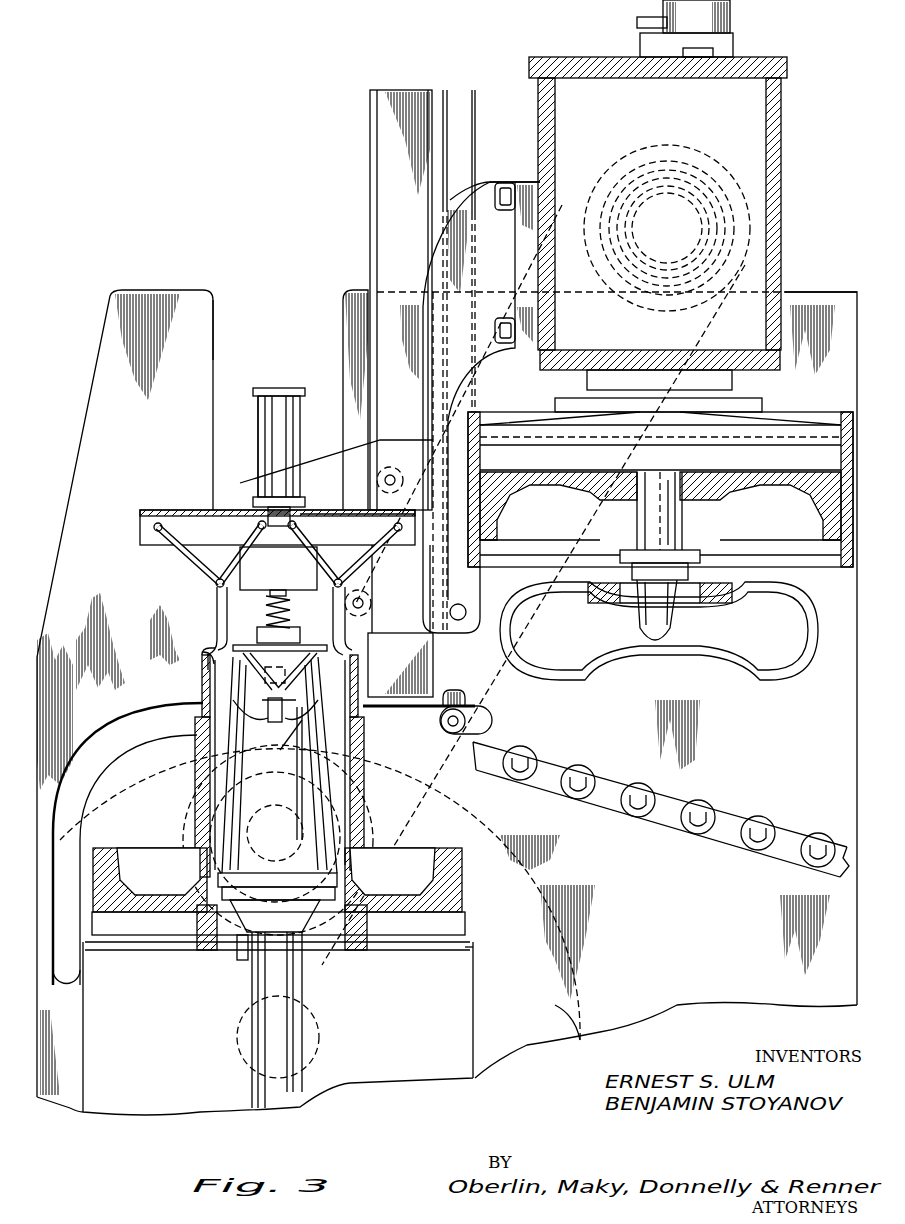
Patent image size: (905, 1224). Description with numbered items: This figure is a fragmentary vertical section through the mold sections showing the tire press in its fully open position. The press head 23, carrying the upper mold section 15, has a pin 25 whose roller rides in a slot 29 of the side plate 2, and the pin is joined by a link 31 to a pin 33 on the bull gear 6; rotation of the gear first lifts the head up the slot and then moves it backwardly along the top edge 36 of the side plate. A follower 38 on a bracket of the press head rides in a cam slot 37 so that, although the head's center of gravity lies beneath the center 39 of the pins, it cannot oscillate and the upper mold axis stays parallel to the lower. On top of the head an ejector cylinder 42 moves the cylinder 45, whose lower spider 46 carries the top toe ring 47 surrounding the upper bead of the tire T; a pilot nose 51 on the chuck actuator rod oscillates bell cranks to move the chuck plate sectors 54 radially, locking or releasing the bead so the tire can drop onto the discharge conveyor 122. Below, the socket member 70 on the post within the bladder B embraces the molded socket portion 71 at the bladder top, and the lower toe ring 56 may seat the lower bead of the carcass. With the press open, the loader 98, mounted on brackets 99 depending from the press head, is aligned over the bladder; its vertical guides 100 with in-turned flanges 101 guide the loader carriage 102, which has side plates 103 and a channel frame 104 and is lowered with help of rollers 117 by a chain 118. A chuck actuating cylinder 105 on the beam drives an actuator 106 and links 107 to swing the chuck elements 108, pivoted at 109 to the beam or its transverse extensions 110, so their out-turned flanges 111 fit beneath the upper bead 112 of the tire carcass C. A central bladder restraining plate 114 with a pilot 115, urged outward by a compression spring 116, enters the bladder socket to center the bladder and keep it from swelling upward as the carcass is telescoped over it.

The side plate 2 is at (203, 292).
The bull gear 6 is at (325, 910).
The upper mold section 15 is at (498, 480).
The press head 23 is at (786, 187).
The pin 25 is at (645, 200).
The slot 29 is at (218, 330).
The link 31 is at (640, 470).
The pin 33 is at (195, 862).
The top edge 36 is at (803, 292).
The cam slot 37 is at (133, 715).
The follower 38 is at (448, 735).
The center 39 is at (662, 220).
The ejector cylinder 42 is at (728, 10).
The cylinder 45 is at (682, 520).
The spider 46 is at (622, 552).
The top toe ring 47 is at (732, 590).
The pilot nose 51 is at (668, 628).
The chuck plate sector 54 is at (718, 603).
The lower toe ring 56 is at (322, 895).
The socket member 70 is at (255, 680).
The molded socket portion 71 is at (262, 705).
The loader 98 is at (288, 388).
The bracket 99 is at (490, 182).
The guide 100 is at (372, 177).
The in-turned flange 101 is at (377, 225).
The loader carriage 102 is at (437, 637).
The side plate 103 is at (395, 440).
The channel frame 104 is at (320, 512).
The chuck actuating cylinder 105 is at (255, 405).
The actuator 106 is at (265, 520).
The link 107 is at (278, 568).
The chuck element 108 is at (217, 622).
The pivot 109 is at (165, 540).
The transverse extension 110 is at (150, 512).
The out-turned flange 111 is at (205, 668).
The upper bead 112 is at (205, 647).
The bladder restraining plate 114 is at (352, 650).
The pilot 115 is at (277, 794).
The compression spring 116 is at (265, 600).
The roller 117 is at (372, 606).
The chain 118 is at (443, 209).
The discharge conveyor 122 is at (712, 795).
The bladder B is at (330, 800).
The tire carcass C is at (195, 748).
The tire T is at (792, 682).